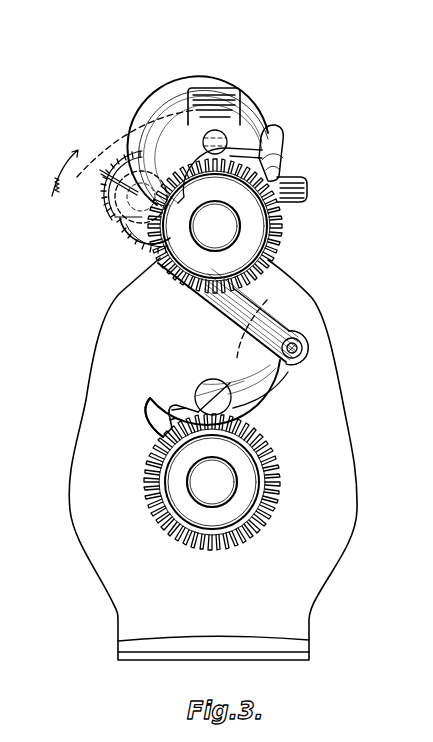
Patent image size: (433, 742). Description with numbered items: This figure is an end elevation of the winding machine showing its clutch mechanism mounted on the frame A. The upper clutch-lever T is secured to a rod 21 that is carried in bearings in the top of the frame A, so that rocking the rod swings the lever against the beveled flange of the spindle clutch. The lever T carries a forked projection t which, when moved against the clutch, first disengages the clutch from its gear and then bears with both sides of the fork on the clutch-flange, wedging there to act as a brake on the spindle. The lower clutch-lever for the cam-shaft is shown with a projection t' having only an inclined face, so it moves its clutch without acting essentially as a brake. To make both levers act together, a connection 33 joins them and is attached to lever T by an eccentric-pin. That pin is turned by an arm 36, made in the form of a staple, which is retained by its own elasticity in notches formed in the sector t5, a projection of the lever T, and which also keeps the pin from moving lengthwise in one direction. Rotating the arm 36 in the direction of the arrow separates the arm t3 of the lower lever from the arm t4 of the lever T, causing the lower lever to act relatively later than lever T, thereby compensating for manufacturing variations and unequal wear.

The frame A is at (213, 459).
The rod 21 is at (238, 125).
The lever T is at (262, 135).
The forked projection t is at (282, 153).
The arm t4 is at (181, 165).
The sector t5 is at (124, 156).
The arm 36 is at (100, 171).
The connection 33 is at (225, 312).
The arm t3 is at (282, 372).
The projection t' is at (143, 419).